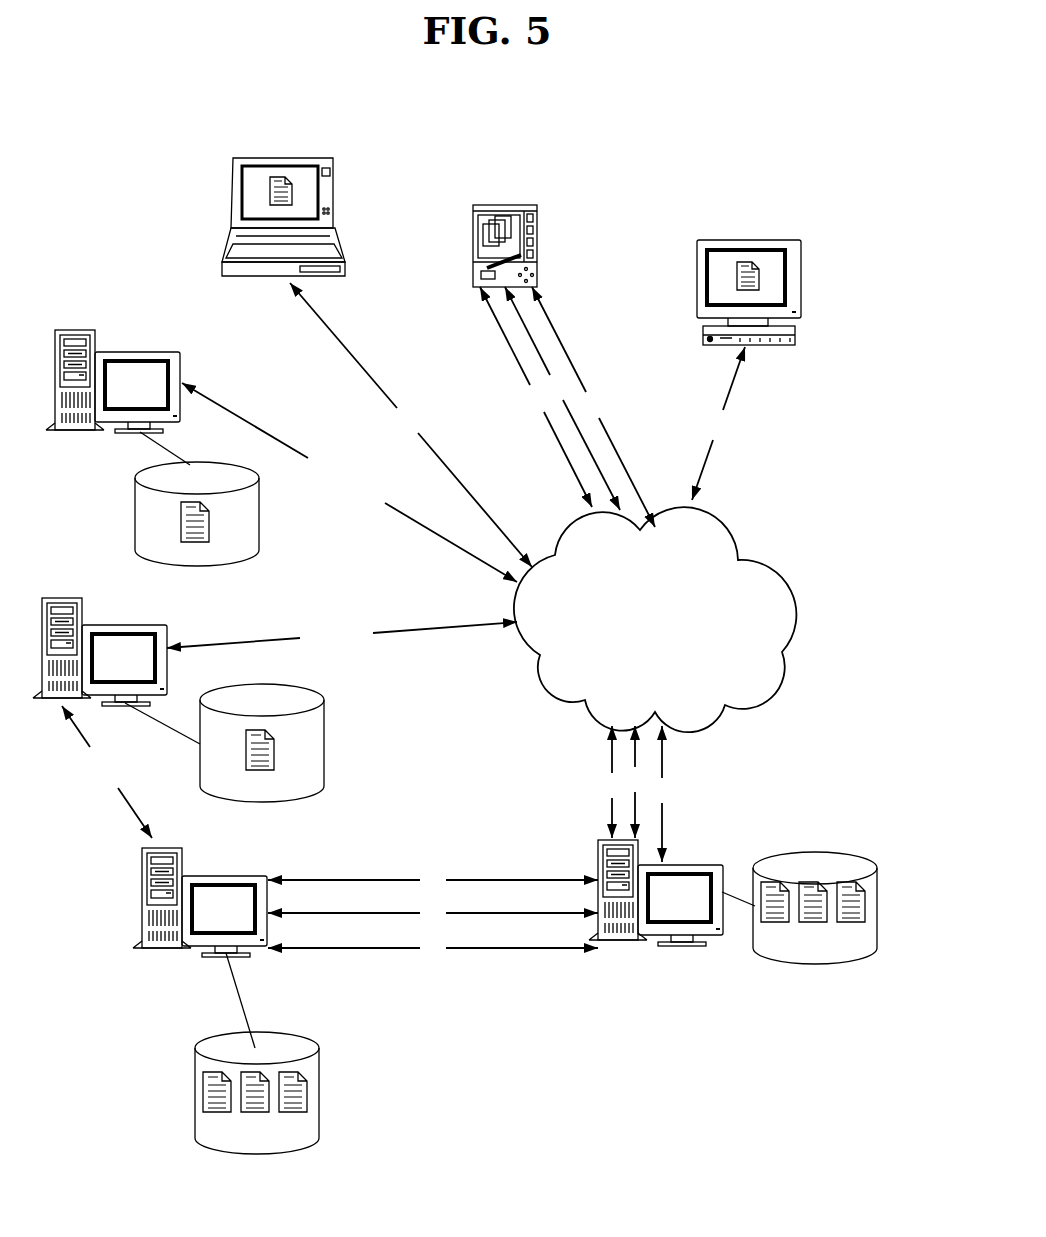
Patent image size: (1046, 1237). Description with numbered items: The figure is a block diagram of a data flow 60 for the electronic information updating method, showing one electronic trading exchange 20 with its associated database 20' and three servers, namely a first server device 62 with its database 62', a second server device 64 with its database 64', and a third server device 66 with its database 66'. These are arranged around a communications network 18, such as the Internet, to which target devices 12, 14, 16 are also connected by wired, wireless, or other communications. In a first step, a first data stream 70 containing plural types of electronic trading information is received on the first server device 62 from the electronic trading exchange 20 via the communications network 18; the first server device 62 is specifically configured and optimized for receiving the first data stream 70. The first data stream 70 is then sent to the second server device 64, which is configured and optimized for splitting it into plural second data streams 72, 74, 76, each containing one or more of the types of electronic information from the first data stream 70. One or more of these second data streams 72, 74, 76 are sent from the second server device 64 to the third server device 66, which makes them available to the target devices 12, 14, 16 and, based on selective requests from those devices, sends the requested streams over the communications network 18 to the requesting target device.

The data flow 60 is at (722, 92).
The target device 12 is at (285, 158).
The target device 14 is at (530, 207).
The target device 16 is at (748, 240).
The communications network 18 is at (790, 630).
The electronic trading exchange 20 is at (105, 406).
The associated database 20' is at (228, 514).
The first server device 62 is at (116, 665).
The associated database 62' is at (299, 743).
The second server device 64 is at (218, 934).
The associated database 64' is at (261, 1070).
The third server device 66 is at (672, 880).
The associated database 66' is at (838, 882).
The first data stream 70 is at (250, 424).
The second data stream 72 is at (372, 372).
The second data stream 74 is at (453, 912).
The second data stream 76 is at (512, 982).